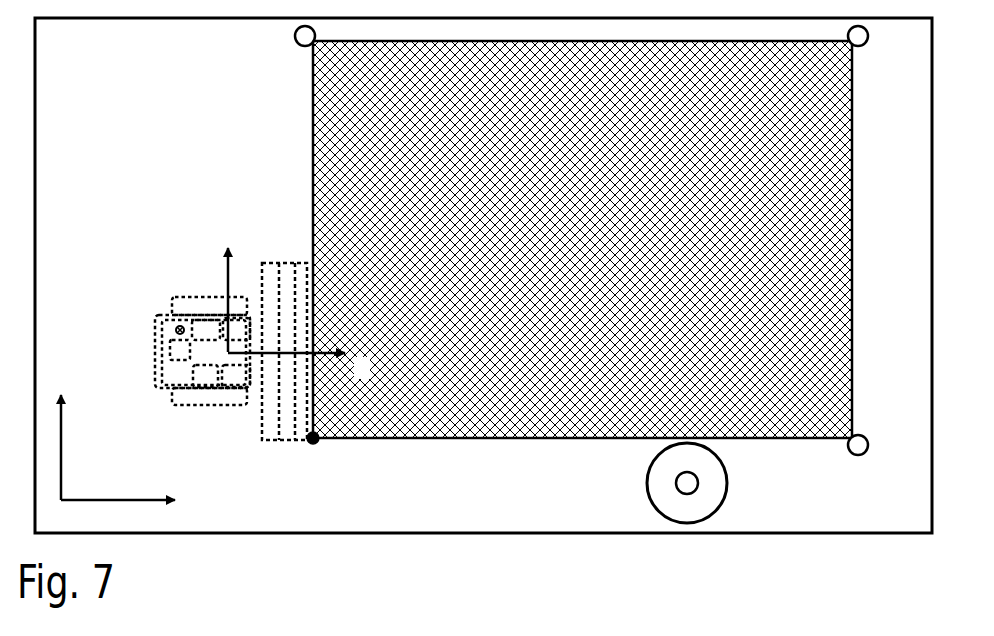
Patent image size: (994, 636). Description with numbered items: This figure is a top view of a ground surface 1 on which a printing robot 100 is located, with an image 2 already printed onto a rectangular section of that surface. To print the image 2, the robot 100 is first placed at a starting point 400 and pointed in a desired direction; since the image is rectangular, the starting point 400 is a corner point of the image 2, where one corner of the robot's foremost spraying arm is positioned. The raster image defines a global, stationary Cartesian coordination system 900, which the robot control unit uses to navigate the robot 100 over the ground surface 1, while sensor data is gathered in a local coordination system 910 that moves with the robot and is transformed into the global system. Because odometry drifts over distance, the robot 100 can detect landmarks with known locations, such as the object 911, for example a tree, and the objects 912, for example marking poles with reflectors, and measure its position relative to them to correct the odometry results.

The ground surface 1 is at (627, 535).
The image 2 is at (535, 440).
The robot 100 is at (157, 290).
The starting point 400 is at (318, 443).
The global coordination system 900 is at (61, 455).
The local coordination system 910 is at (232, 273).
The object (landmark, e.g. tree) 911 is at (727, 467).
The objects (landmarks, e.g. marking poles with reflectors) 912 is at (297, 44).